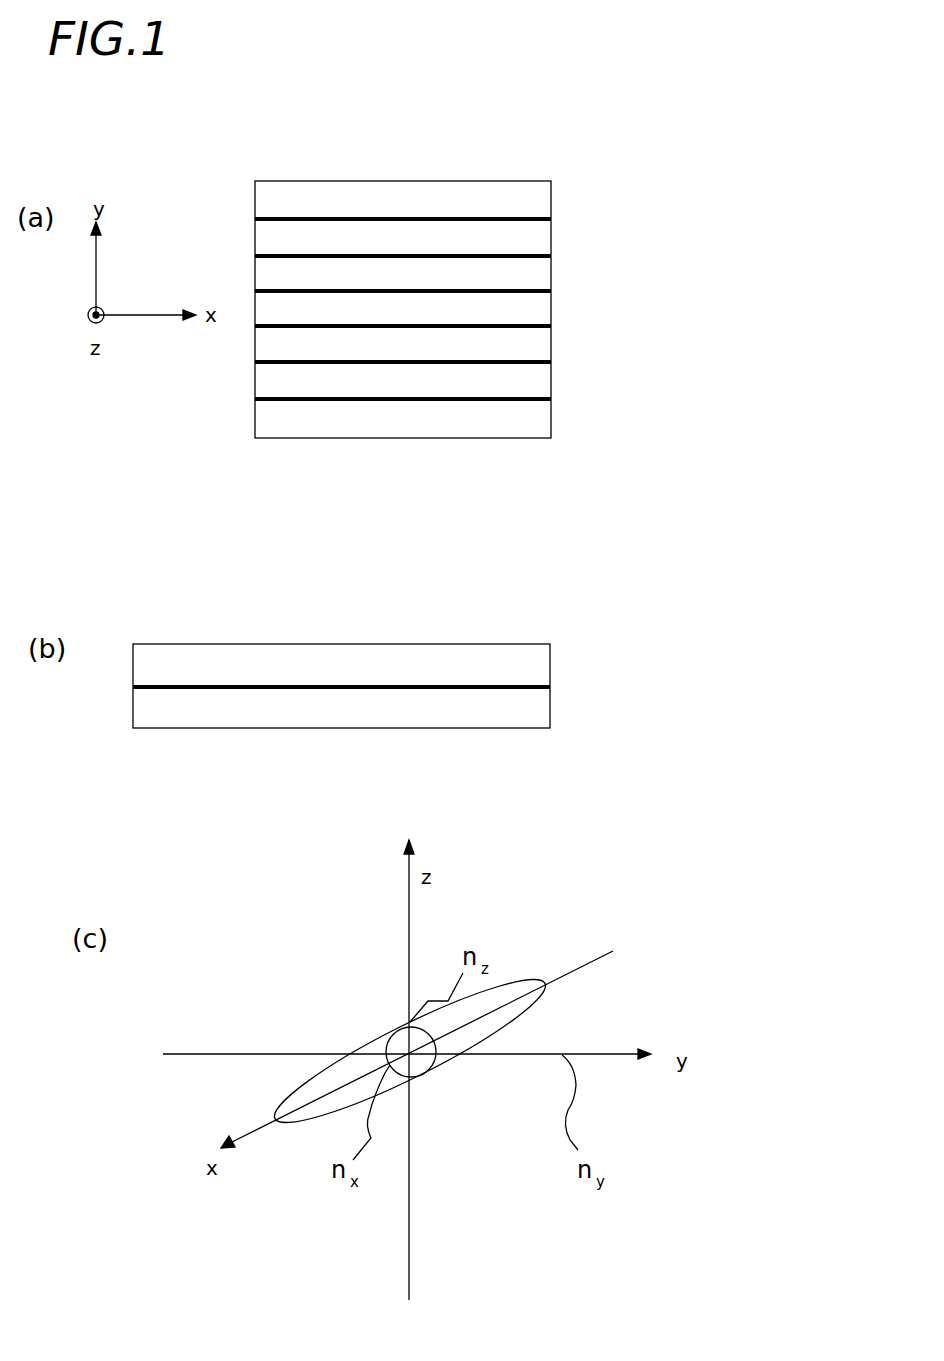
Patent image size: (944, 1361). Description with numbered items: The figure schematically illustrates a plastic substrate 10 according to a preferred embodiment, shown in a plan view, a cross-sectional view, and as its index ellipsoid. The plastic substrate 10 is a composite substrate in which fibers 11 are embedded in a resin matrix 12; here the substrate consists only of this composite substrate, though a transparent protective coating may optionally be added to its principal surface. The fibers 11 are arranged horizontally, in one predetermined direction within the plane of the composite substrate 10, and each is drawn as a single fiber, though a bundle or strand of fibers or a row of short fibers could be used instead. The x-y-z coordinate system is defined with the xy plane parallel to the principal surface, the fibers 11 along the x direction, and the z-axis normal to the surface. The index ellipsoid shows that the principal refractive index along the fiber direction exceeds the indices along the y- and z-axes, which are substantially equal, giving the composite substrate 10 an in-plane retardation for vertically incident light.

The plastic substrate 10 is at (652, 130).
The fibers 11 is at (508, 218).
The resin matrix 12 is at (538, 237).